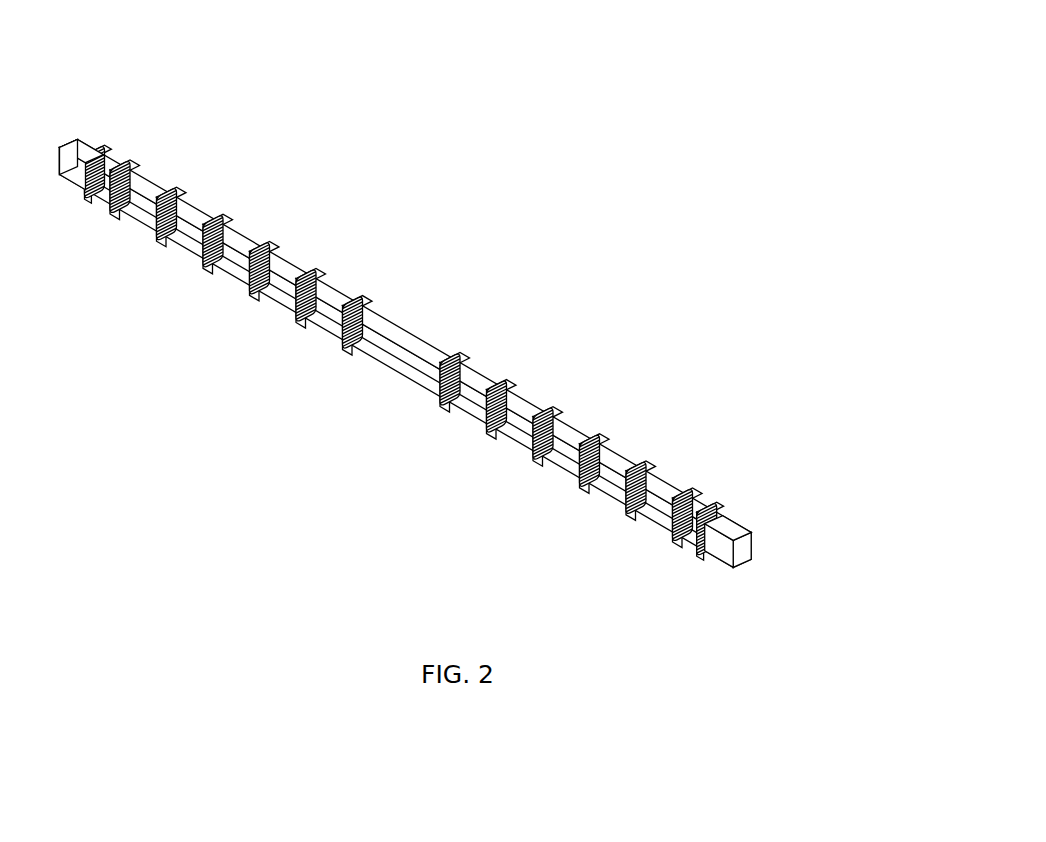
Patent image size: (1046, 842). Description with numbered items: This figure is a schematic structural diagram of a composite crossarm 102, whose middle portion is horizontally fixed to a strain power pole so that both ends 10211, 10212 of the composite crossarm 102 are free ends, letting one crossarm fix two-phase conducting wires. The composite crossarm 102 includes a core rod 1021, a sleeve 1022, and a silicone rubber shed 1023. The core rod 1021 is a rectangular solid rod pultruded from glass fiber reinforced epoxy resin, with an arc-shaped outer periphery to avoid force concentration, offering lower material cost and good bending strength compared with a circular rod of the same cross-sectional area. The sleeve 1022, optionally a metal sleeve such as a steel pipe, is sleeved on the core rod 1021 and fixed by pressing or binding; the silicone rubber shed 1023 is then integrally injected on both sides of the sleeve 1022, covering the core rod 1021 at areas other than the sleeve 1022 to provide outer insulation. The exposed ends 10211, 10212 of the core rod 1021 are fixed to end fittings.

The composite crossarm 102 is at (428, 64).
The core rod 1021 is at (84, 146).
The end of the composite crossarm 10211 is at (752, 510).
The end of the composite crossarm 10212 is at (72, 212).
The sleeve 1022 is at (403, 335).
The silicone rubber shed 1023 is at (550, 410).